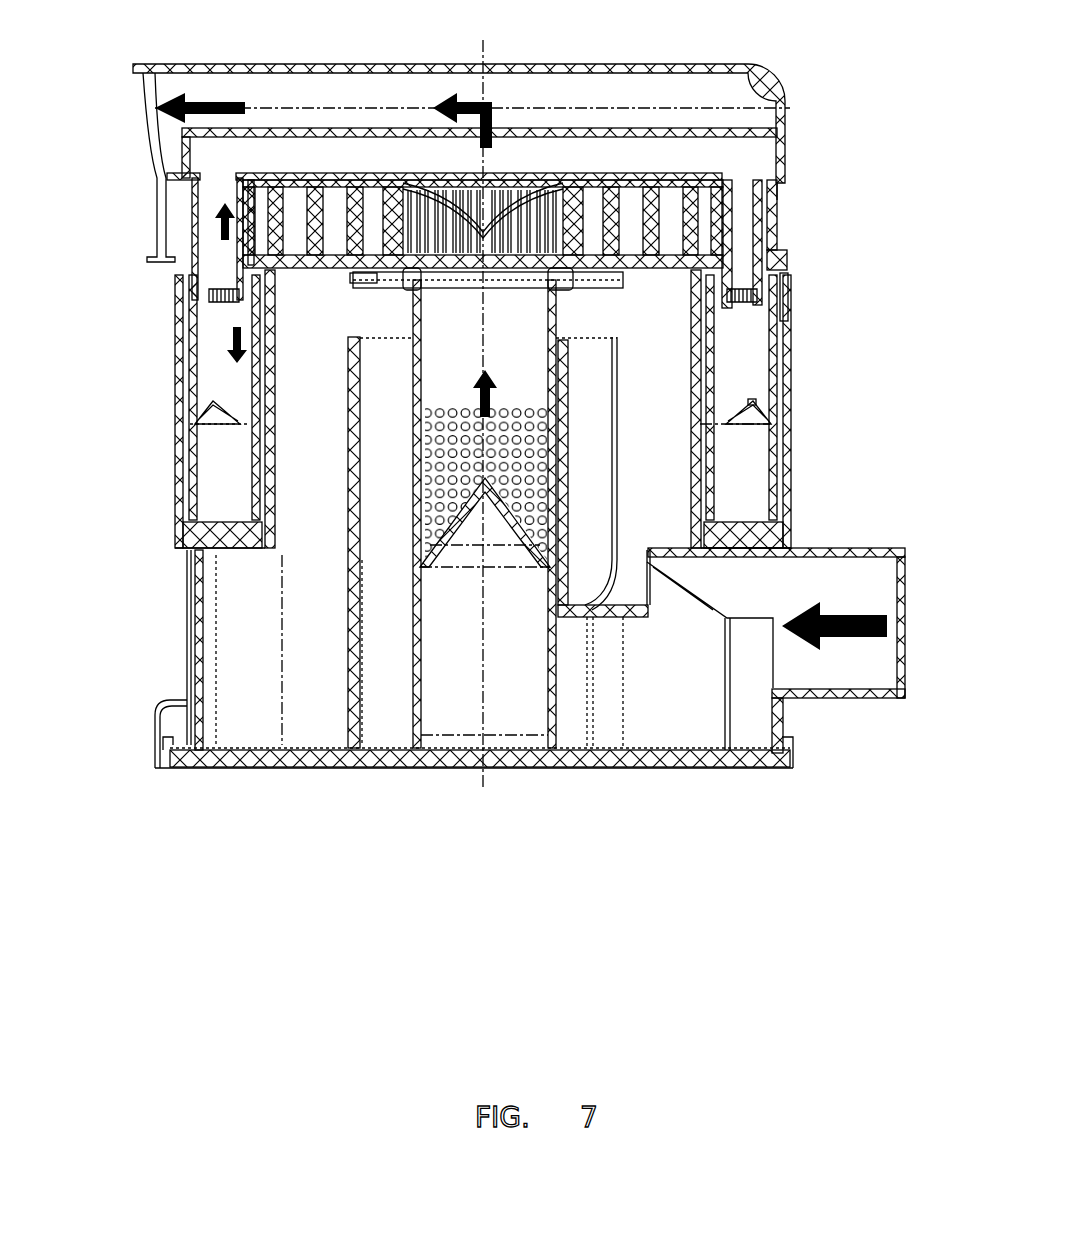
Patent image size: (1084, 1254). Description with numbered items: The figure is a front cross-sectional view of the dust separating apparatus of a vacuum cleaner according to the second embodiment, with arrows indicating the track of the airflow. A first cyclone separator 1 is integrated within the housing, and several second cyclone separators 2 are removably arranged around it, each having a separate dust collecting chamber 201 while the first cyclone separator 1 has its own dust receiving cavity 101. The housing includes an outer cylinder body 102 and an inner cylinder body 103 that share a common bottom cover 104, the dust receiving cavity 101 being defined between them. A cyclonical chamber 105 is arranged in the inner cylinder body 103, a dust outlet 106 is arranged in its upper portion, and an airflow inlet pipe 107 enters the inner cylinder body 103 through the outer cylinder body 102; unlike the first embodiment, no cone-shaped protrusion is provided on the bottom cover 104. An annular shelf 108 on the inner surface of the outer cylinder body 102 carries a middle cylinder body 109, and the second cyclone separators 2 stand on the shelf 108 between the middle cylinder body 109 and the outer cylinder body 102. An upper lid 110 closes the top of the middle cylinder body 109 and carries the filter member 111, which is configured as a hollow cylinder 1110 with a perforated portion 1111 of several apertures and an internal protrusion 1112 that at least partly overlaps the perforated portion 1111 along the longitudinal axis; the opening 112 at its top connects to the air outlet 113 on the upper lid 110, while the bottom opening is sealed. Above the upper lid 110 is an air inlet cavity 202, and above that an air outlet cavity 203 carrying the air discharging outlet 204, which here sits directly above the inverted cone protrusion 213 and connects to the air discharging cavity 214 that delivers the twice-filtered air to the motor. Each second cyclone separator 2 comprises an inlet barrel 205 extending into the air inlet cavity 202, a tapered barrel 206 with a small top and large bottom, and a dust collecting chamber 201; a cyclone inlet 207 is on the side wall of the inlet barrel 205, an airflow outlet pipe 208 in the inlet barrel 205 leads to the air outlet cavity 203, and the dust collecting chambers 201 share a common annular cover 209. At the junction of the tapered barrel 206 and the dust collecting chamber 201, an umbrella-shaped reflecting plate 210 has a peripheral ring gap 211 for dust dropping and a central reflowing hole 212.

The first cyclone separator 1 is at (185, 632).
The second cyclone separator 2 is at (773, 362).
The dust receiving cavity 101 is at (255, 690).
The outer cylinder body 102 is at (200, 760).
The inner cylinder body 103 is at (350, 745).
The bottom cover 104 is at (658, 762).
The cyclonical chamber 105 is at (380, 625).
The dust outlet 106 is at (300, 327).
The airflow inlet pipe 107 is at (882, 665).
The annular shelf 108 is at (213, 542).
The middle cylinder body 109 is at (353, 413).
The upper lid 110 is at (287, 270).
The filter member 111 is at (527, 392).
The hollow cylinder 1110 is at (415, 390).
The perforated portion 1111 is at (445, 468).
The protrusion 1112 is at (477, 497).
The opening 112 is at (527, 286).
The air outlet 113 is at (435, 262).
The dust collecting chamber 201 is at (752, 503).
The air inlet cavity 202 is at (672, 216).
The air outlet cavity 203 is at (727, 154).
The air discharging outlet 204 is at (415, 135).
The inlet barrel 205 is at (777, 218).
The tapered barrel 206 is at (775, 318).
The cyclone inlet 207 is at (764, 250).
The airflow outlet pipe 208 is at (757, 296).
The annular cover 209 is at (760, 522).
The umbrella-shaped reflecting plate 210 is at (758, 413).
The ring gap 211 is at (766, 424).
The reflowing hole 212 is at (752, 403).
The inverted cone protrusion 213 is at (505, 206).
The air discharging cavity 214 is at (722, 93).